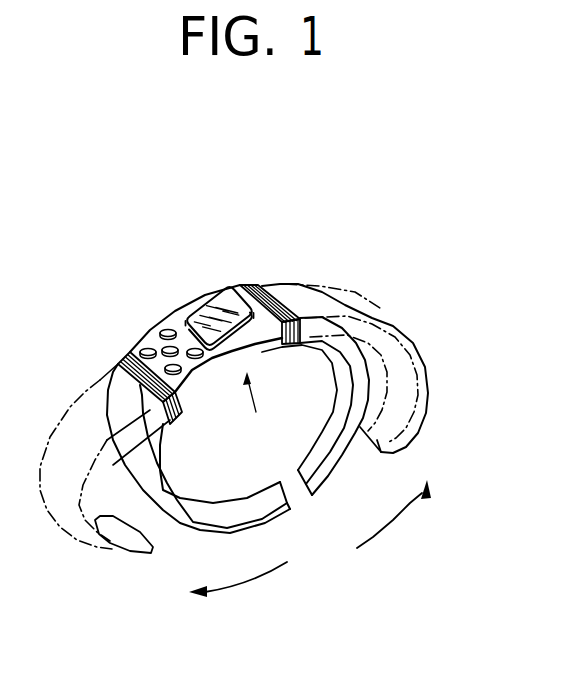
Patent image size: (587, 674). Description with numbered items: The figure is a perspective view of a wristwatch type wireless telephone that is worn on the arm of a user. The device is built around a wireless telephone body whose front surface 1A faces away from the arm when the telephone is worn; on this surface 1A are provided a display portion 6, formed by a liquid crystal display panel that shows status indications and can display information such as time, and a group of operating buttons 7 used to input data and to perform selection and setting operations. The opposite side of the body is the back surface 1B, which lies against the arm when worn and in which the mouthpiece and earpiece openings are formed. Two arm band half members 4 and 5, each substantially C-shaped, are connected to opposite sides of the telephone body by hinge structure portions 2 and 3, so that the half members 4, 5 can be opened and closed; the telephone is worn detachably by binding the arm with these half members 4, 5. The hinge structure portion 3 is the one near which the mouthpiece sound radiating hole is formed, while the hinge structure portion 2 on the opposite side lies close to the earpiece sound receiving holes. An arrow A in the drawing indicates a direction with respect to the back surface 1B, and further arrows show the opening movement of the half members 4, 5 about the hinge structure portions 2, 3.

The surface 1A is at (184, 327).
The surface 1B is at (247, 348).
The hinge structure portion 2 is at (247, 286).
The hinge structure portion 3 is at (122, 362).
The arm band half member 4 is at (343, 447).
The arm band half member 5 is at (197, 524).
The display portion 6 is at (210, 300).
The operating buttons 7 is at (165, 332).
The direction arrow A is at (260, 398).